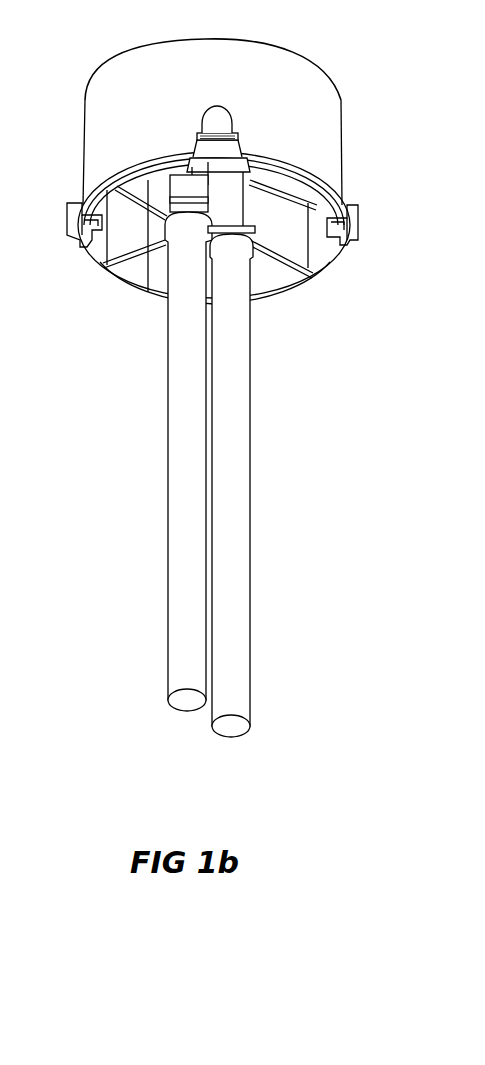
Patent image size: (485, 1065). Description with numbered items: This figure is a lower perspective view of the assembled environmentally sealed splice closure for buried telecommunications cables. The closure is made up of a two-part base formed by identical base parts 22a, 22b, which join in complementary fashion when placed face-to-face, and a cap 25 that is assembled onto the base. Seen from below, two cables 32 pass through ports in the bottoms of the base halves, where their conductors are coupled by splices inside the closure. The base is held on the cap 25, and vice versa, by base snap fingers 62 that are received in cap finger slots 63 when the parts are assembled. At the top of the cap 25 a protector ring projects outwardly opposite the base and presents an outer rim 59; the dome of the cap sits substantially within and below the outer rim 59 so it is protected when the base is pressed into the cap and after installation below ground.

The outer rim 59 is at (219, 40).
The cap finger slots 63 is at (210, 113).
The cap 25 is at (87, 160).
The base snap fingers 62 is at (88, 246).
The base part 22a is at (318, 265).
The base part 22b is at (122, 270).
The cables 32 is at (168, 327).